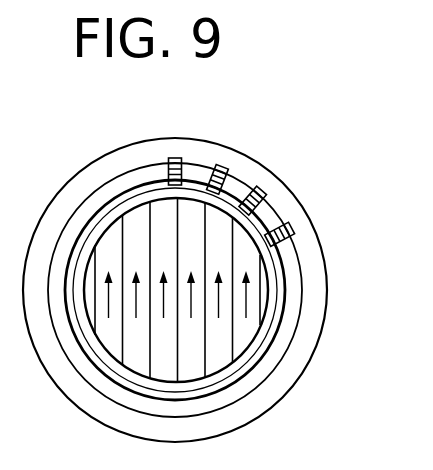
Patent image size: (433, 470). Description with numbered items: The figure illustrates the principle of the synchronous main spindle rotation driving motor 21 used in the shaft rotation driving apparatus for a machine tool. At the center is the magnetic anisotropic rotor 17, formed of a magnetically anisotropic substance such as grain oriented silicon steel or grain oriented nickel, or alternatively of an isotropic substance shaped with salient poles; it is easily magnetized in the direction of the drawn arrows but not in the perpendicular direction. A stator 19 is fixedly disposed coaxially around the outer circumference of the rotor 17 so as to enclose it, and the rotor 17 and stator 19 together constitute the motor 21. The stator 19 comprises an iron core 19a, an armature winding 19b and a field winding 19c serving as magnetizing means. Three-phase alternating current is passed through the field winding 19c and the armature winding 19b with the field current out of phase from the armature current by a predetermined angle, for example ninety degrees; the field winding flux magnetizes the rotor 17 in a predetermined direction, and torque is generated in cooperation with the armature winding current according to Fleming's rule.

The magnetic anisotropic rotor 17 is at (218, 345).
The stator 19 is at (213, 270).
The iron core 19a is at (135, 168).
The armature winding 19b is at (183, 170).
The field winding 19c is at (183, 162).
The synchronous main spindle rotation driving motor 21 is at (314, 216).